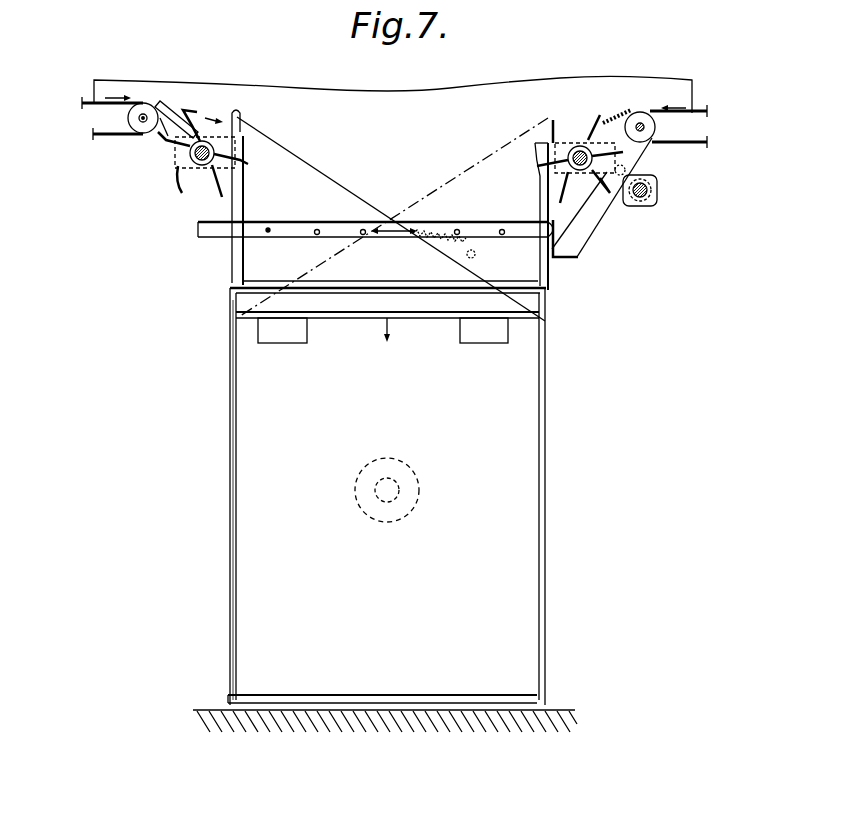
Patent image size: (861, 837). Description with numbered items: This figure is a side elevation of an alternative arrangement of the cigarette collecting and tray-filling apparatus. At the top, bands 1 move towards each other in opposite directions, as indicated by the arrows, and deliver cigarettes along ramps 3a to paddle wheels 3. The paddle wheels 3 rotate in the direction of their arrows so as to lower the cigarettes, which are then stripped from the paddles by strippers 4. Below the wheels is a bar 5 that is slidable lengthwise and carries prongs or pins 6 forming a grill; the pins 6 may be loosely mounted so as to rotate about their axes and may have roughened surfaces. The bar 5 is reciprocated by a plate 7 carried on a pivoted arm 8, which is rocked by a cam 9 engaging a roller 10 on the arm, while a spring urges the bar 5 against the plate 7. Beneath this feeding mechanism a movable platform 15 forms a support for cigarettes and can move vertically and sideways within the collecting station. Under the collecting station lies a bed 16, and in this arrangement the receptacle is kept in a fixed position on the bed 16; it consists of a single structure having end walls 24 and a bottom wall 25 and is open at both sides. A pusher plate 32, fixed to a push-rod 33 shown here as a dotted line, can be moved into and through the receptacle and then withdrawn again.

The bands 1 is at (698, 108).
The paddle wheels 3 is at (222, 148).
The ramps 3a is at (603, 117).
The strippers 4 is at (244, 196).
The bar 5 is at (285, 232).
The prongs or pins 6 is at (317, 228).
The plate 7 is at (560, 264).
The pivoted arm 8 is at (584, 228).
The cam 9 is at (647, 207).
The roller 10 is at (636, 155).
The movable platform 15 is at (366, 318).
The bed 16 is at (555, 709).
The end walls 24 is at (546, 493).
The bottom wall 25 is at (486, 704).
The pusher plate 32 is at (263, 413).
The push-rod 33 is at (386, 478).